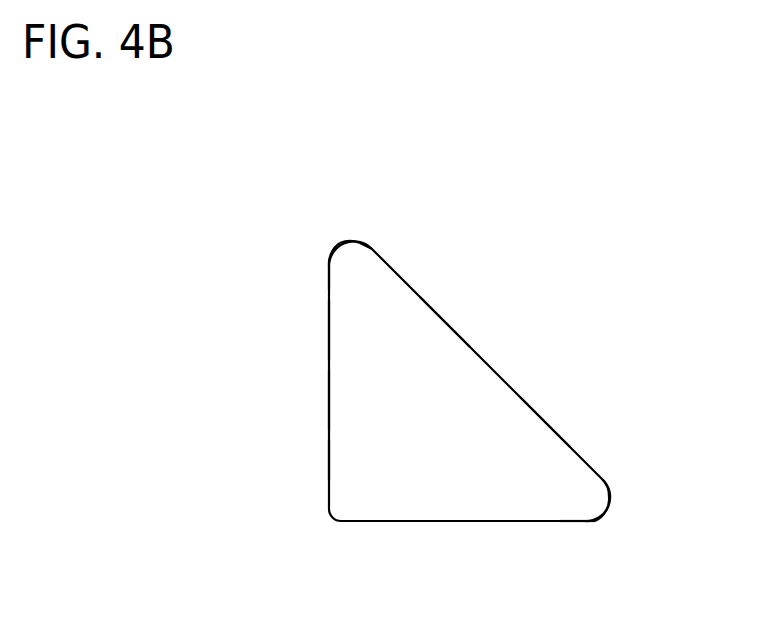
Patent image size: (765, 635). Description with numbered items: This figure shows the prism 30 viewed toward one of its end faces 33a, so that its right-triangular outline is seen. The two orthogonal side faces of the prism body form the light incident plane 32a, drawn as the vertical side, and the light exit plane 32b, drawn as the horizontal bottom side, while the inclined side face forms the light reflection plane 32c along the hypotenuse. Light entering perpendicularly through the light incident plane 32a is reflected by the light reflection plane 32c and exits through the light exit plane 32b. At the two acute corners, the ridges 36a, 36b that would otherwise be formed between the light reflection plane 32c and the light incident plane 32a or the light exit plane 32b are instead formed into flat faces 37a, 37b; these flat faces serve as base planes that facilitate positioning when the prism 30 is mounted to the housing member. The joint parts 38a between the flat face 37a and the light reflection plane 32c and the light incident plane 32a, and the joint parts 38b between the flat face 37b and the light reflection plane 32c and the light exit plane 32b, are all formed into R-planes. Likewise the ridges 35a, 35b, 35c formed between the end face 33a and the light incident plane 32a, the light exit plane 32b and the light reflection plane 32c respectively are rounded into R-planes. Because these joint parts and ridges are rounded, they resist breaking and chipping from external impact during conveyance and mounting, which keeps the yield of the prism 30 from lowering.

The prism 30 is at (568, 250).
The light incident plane 32a is at (328, 388).
The light exit plane 32b is at (468, 521).
The light reflection plane 32c is at (445, 322).
The end face 33a is at (343, 452).
The ridge 35a is at (328, 323).
The ridge 35b is at (382, 521).
The ridge 35c is at (545, 421).
The ridge 36a is at (348, 241).
The ridge 36b is at (596, 522).
The flat face 37a is at (338, 248).
The flat face 37b is at (598, 522).
The joint part 38a is at (362, 243).
The joint part 38b is at (607, 489).